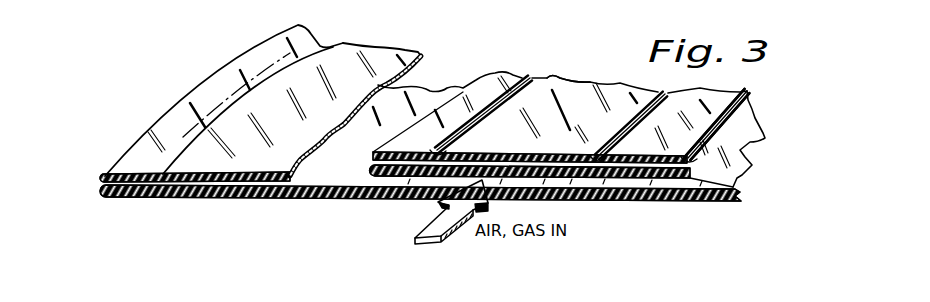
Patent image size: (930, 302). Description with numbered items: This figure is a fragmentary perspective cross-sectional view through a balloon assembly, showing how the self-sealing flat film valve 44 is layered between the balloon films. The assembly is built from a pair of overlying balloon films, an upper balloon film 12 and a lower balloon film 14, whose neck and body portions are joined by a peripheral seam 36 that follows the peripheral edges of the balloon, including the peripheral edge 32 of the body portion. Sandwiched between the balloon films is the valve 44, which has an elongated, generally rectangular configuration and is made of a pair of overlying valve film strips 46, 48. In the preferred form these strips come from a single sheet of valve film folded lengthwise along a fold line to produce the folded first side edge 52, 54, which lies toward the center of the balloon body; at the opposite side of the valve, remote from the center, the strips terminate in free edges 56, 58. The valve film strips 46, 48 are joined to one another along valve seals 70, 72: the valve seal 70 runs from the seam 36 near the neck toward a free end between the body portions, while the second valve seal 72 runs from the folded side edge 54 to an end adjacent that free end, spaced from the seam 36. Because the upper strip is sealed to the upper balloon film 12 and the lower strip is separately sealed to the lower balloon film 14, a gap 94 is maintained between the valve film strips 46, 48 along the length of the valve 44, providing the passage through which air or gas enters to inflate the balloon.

The upper balloon film 12 is at (377, 55).
The lower balloon film 14 is at (742, 160).
The peripheral edge of body portion 32 is at (101, 186).
The peripheral seam 36 is at (186, 138).
The valve 44 is at (593, 78).
The upper valve film strip 46 is at (560, 80).
The lower valve film strip 48 is at (455, 184).
The rib 52 is at (750, 98).
The first side edge 54 is at (741, 124).
The free edge of valve film strip 56 is at (345, 124).
The free edge of valve film strip 58 is at (385, 161).
The valve seal 70 is at (440, 149).
The second valve seal 72 is at (598, 145).
The gap 94 is at (540, 153).